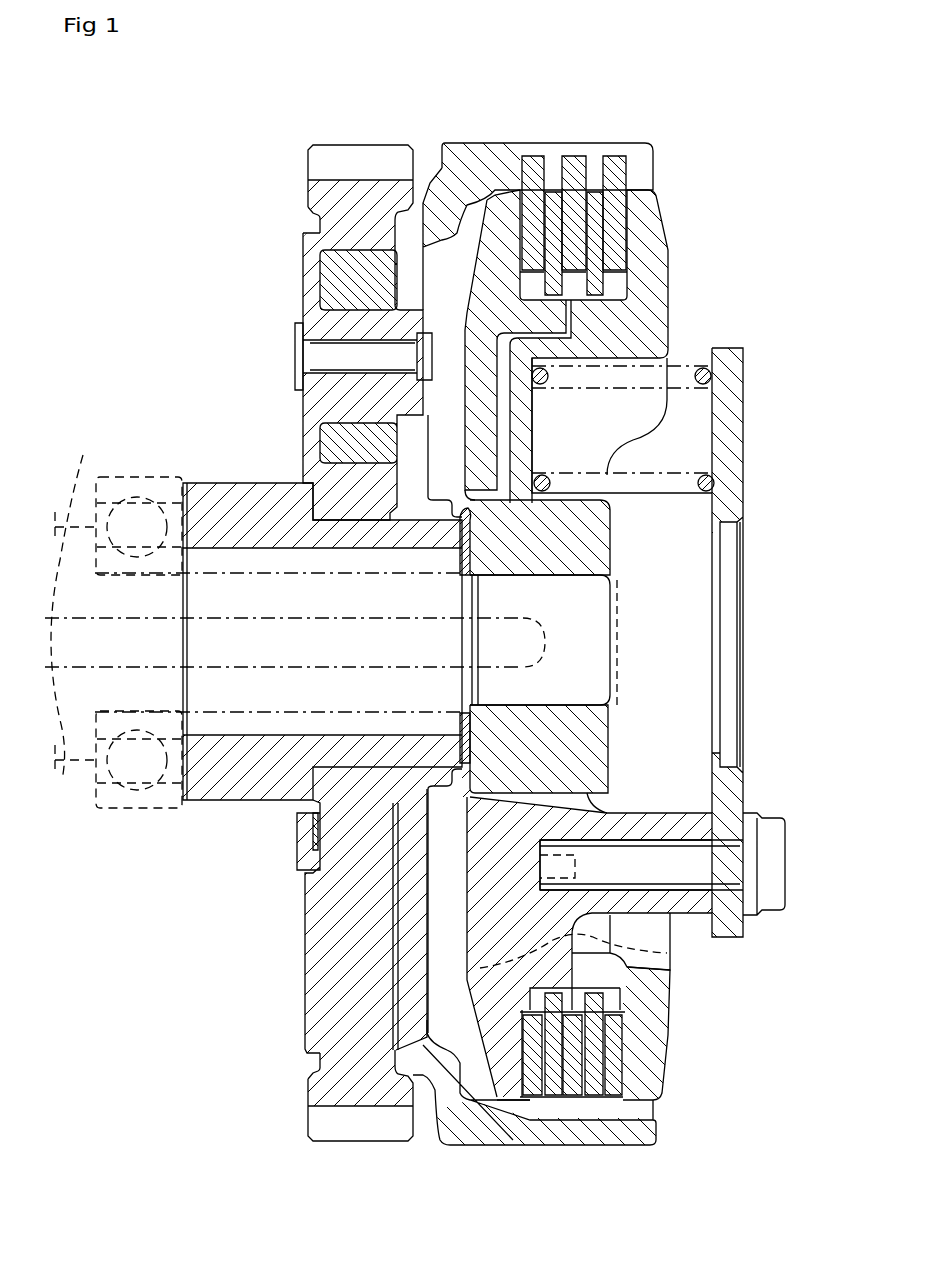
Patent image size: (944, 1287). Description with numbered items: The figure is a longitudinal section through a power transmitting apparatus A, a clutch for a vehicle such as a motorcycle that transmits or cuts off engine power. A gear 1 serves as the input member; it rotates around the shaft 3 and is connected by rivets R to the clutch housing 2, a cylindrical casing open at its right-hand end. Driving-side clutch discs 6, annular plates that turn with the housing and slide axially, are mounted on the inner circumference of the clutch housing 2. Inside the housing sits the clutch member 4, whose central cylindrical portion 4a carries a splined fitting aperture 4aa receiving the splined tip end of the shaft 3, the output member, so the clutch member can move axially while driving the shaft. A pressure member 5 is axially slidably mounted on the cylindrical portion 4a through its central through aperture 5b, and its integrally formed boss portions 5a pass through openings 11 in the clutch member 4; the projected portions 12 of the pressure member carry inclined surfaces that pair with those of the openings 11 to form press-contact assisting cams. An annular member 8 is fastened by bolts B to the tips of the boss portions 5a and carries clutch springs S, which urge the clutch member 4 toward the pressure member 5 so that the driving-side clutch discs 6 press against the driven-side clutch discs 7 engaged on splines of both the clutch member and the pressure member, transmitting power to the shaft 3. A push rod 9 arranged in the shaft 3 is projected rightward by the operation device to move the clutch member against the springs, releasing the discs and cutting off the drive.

The gear 1 is at (348, 150).
The clutch housing 2 is at (485, 150).
The shaft 3 is at (116, 621).
The clutch member 4 is at (666, 240).
The cylindrical portion 4a is at (598, 548).
The splined fitting aperture 4aa is at (585, 577).
The pressure member 5 is at (460, 292).
The boss portions 5a is at (675, 812).
The through aperture 5b is at (452, 520).
The driving-side clutch discs 6 is at (600, 175).
The driven-side clutch discs 7 is at (597, 298).
The annular member 8 is at (735, 430).
The push rod 9 is at (205, 632).
The openings 11 is at (605, 800).
The projected portions 12 is at (667, 952).
The power transmitting apparatus A is at (207, 312).
The bolts B is at (786, 876).
The rivets R is at (300, 346).
The clutch springs S is at (680, 355).